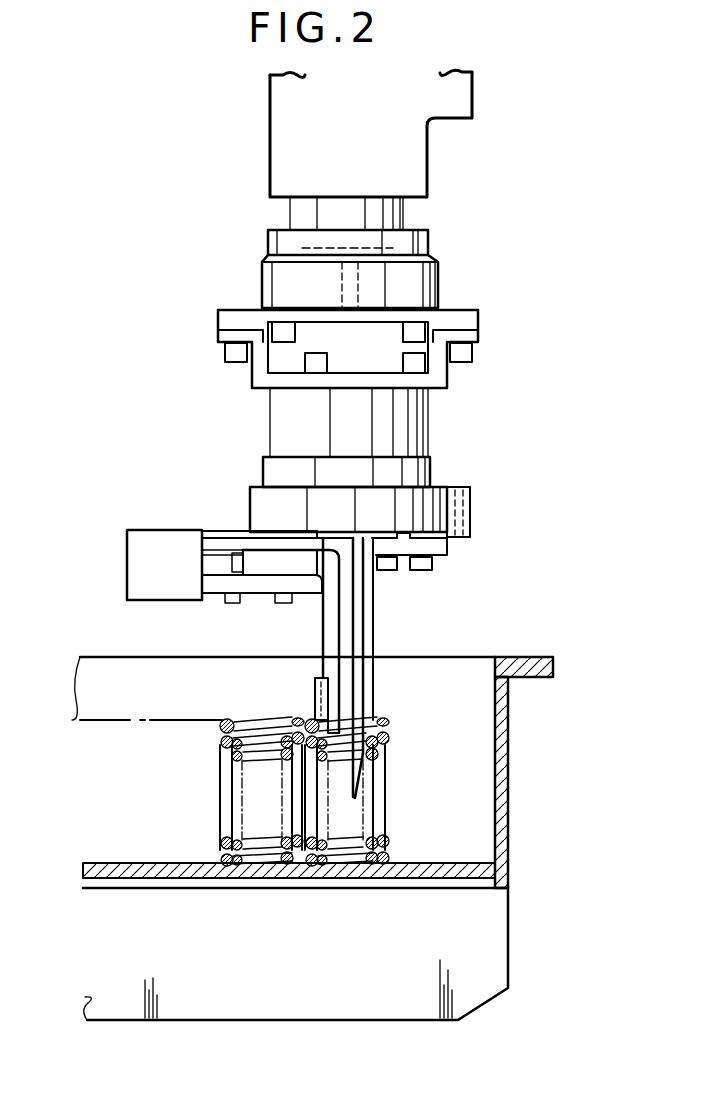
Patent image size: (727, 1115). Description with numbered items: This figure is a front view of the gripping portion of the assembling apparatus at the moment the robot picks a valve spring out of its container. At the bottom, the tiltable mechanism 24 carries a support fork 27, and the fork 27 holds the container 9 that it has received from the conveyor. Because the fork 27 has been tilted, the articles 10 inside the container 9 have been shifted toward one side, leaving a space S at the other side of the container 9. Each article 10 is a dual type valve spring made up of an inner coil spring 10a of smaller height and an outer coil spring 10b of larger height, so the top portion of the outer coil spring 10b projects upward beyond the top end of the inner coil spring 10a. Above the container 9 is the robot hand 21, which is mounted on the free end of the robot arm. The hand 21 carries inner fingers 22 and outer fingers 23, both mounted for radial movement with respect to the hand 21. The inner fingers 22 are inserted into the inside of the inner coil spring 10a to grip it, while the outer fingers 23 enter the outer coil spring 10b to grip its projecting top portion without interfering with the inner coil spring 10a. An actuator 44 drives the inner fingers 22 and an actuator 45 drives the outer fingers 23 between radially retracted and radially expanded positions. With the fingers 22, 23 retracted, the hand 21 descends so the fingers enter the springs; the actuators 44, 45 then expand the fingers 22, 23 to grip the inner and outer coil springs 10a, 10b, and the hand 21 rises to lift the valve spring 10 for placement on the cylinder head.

The robot hand 21 is at (474, 95).
The actuator 44 is at (430, 498).
The actuator 45 is at (175, 548).
The outer fingers 23 is at (322, 622).
The inner fingers 22 is at (371, 637).
The container 9 is at (533, 657).
The article 10 is at (228, 720).
The inner coil spring 10a is at (280, 820).
The outer coil spring 10b is at (217, 830).
The space S is at (475, 790).
The support fork 27 is at (508, 938).
The tiltable mechanism 24 is at (183, 1010).